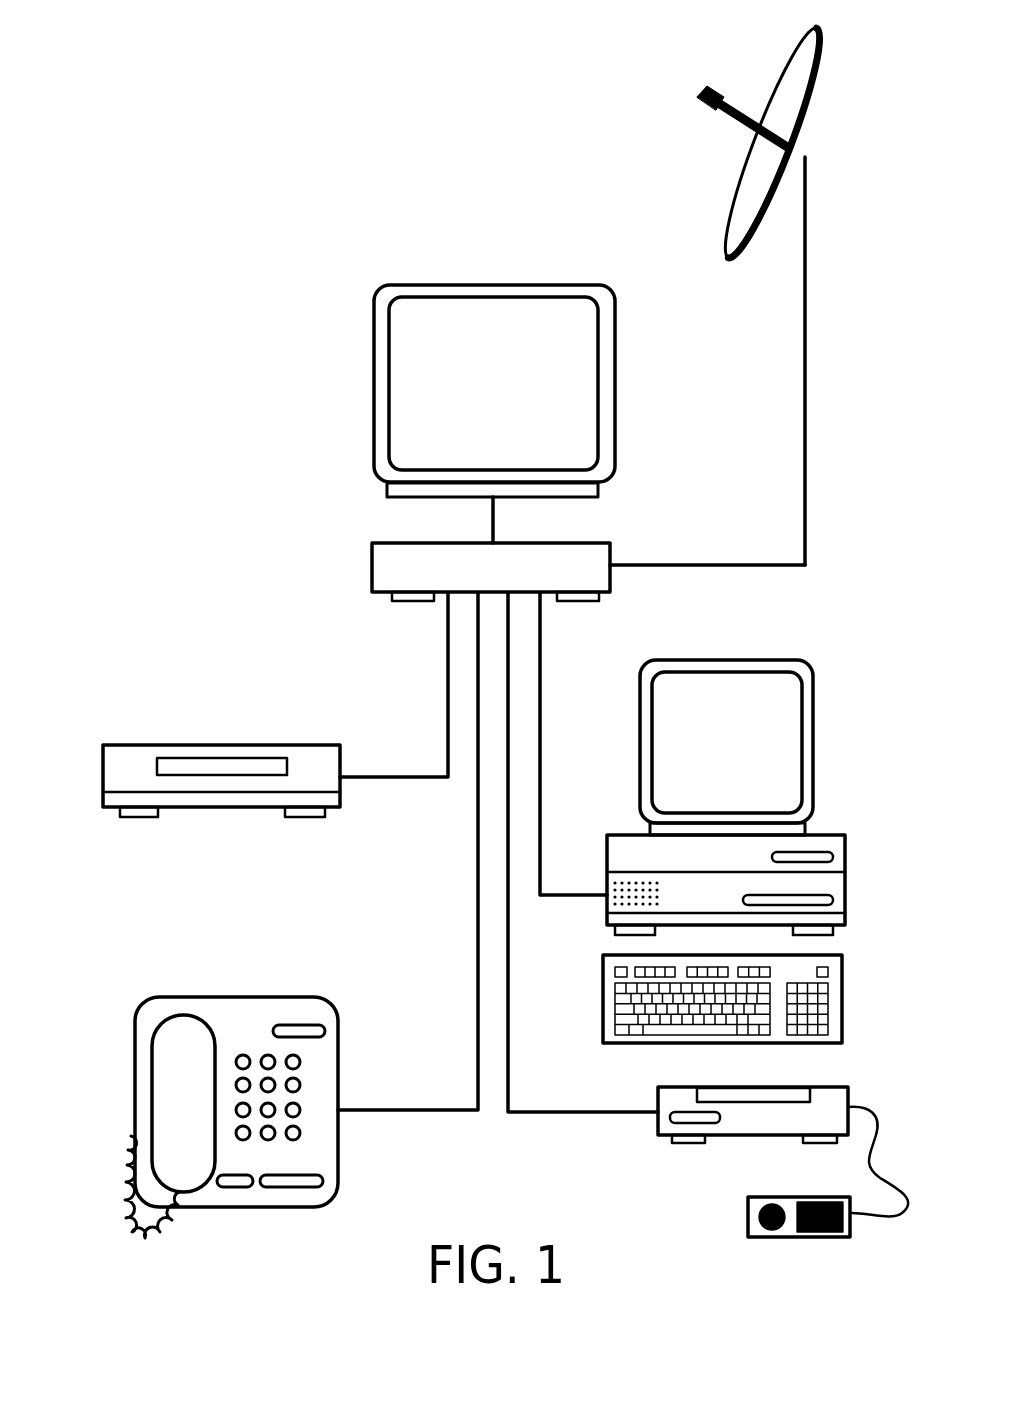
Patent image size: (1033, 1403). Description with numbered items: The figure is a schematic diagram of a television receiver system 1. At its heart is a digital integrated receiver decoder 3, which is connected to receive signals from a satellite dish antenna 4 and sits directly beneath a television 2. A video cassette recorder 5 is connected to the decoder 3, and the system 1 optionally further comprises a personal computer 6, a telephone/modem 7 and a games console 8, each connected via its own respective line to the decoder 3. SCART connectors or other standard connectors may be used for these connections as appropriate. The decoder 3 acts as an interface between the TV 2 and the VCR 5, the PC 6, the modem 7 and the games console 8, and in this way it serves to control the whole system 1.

The television receiver system 1 is at (376, 104).
The television 2 is at (401, 384).
The digital integrated receiver decoder 3 is at (383, 567).
The satellite dish antenna 4 is at (789, 89).
The video cassette recorder 5 is at (113, 771).
The personal computer 6 is at (834, 848).
The telephone/modem 7 is at (142, 1038).
The games console 8 is at (837, 1098).